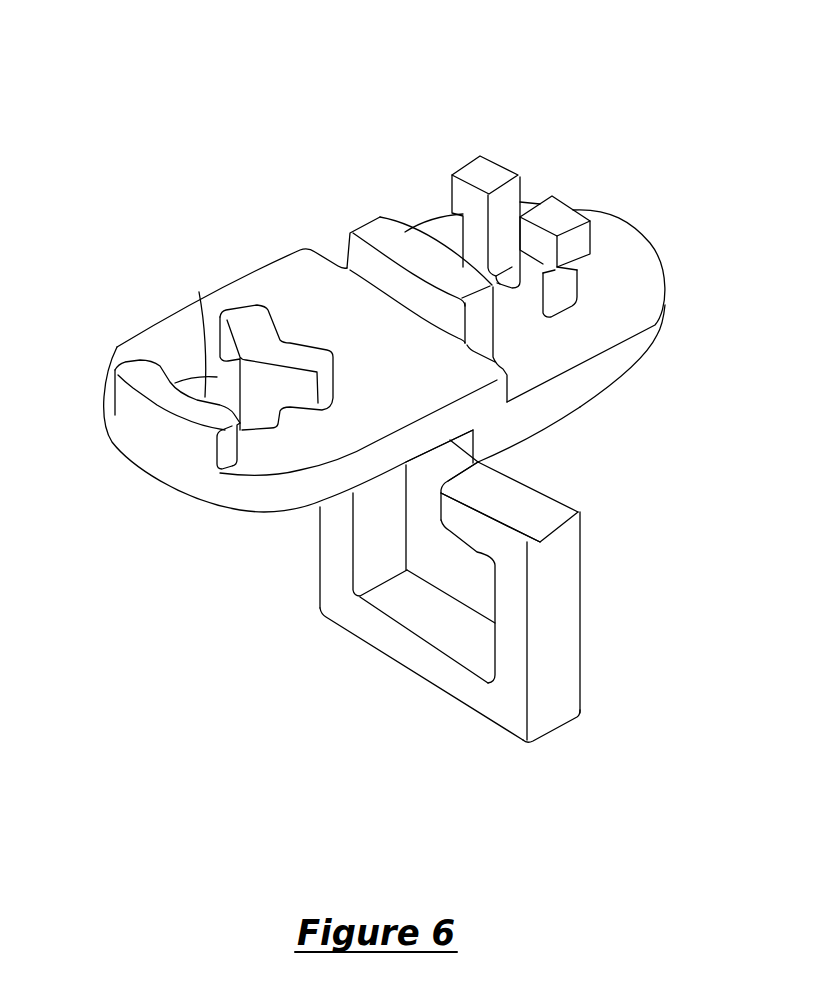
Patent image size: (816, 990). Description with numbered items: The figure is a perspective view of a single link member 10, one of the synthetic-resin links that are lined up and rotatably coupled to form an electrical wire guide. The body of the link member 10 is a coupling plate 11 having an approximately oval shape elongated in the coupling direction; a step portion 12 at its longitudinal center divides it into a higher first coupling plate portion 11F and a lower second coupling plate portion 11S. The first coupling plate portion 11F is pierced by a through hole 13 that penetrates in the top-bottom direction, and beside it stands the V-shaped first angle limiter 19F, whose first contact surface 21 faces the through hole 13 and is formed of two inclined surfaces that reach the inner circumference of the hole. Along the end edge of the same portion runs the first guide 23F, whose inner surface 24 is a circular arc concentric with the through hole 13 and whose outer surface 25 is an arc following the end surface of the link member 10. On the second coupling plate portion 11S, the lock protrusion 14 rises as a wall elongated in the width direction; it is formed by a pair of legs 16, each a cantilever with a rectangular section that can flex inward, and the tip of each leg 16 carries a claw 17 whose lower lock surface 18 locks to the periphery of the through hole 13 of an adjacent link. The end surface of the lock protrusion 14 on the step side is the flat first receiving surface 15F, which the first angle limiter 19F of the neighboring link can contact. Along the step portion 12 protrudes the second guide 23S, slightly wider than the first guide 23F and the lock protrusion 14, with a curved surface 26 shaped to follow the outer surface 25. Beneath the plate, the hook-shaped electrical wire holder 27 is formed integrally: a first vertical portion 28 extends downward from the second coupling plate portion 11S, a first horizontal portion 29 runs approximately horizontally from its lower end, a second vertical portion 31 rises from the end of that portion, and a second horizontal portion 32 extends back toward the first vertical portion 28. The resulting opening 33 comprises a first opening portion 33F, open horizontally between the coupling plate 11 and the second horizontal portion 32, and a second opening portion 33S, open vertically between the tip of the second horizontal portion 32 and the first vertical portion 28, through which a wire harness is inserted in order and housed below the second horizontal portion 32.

The link member 10 is at (311, 73).
The coupling plate 11 is at (287, 270).
The first coupling plate portion 11F is at (297, 455).
The second coupling plate portion 11S is at (638, 295).
The step portion 12 is at (497, 390).
The through hole 13 is at (192, 393).
The lock protrusion 14 is at (552, 210).
The first receiving surface 15F is at (470, 237).
The leg 16 is at (508, 240).
The claw 17 is at (583, 237).
The lock surface 18 is at (574, 272).
The first angle limiter 19F is at (260, 343).
The first contact surface 21 is at (262, 403).
The first guide 23F is at (158, 397).
The second guide 23S is at (388, 237).
The inner surface 24 is at (155, 393).
The outer surface 25 is at (150, 418).
The curved surface 26 is at (430, 247).
The electrical wire holder 27 is at (423, 667).
The first vertical portion 28 is at (333, 528).
The first horizontal portion 29 is at (400, 653).
The second vertical portion 31 is at (557, 640).
The second horizontal portion 32 is at (472, 528).
The opening 33 is at (663, 535).
The first opening portion 33F is at (503, 503).
The second opening portion 33S is at (433, 513).